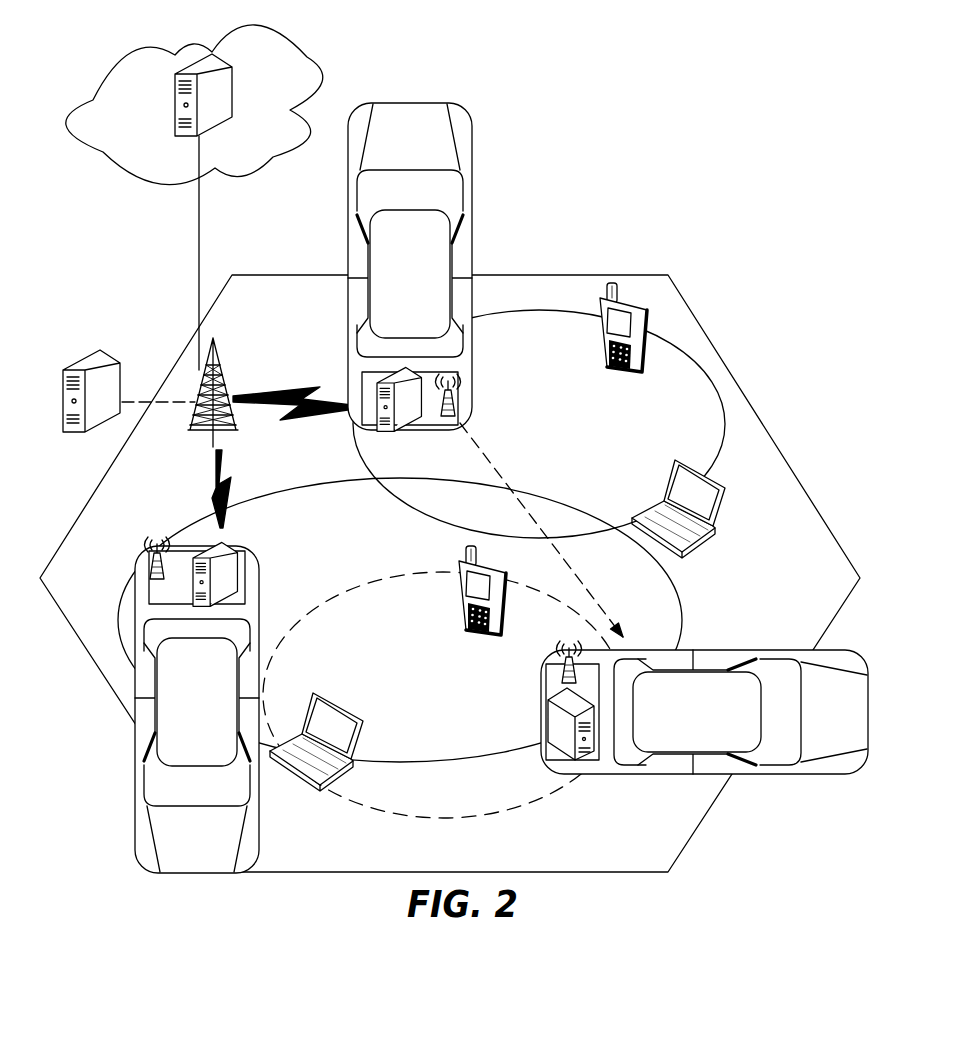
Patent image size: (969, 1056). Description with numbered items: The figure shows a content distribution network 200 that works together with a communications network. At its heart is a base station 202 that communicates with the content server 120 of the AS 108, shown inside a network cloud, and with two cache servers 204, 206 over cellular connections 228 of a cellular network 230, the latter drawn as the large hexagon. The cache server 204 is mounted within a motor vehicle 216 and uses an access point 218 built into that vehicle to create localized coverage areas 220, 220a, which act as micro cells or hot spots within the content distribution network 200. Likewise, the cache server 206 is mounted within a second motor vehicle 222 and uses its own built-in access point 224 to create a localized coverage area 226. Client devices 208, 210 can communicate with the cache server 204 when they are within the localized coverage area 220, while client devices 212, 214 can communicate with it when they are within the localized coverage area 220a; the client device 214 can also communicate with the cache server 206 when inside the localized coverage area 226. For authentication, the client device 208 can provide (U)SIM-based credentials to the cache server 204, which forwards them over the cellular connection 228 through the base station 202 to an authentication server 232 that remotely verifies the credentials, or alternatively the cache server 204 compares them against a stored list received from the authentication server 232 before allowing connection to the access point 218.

The AS 108 is at (313, 53).
The content server 120 is at (175, 100).
The content distribution network 200 is at (736, 212).
The base station 202 is at (218, 372).
The cache server 204 is at (405, 418).
The cache server 206 is at (242, 565).
The client device 208 is at (598, 312).
The client device 210 is at (727, 500).
The client device 212 is at (508, 580).
The client device 214 is at (348, 247).
The motor vehicle 216 is at (458, 404).
The access point 218 is at (562, 673).
The localized coverage area 220 is at (472, 528).
The localized coverage area 220a is at (443, 818).
The motor vehicle 222 is at (138, 752).
The access point 224 is at (152, 553).
The localized coverage area 226 is at (192, 522).
The cellular connection 228 is at (280, 420).
The cellular network 230 is at (708, 340).
The authentication server 232 is at (80, 375).